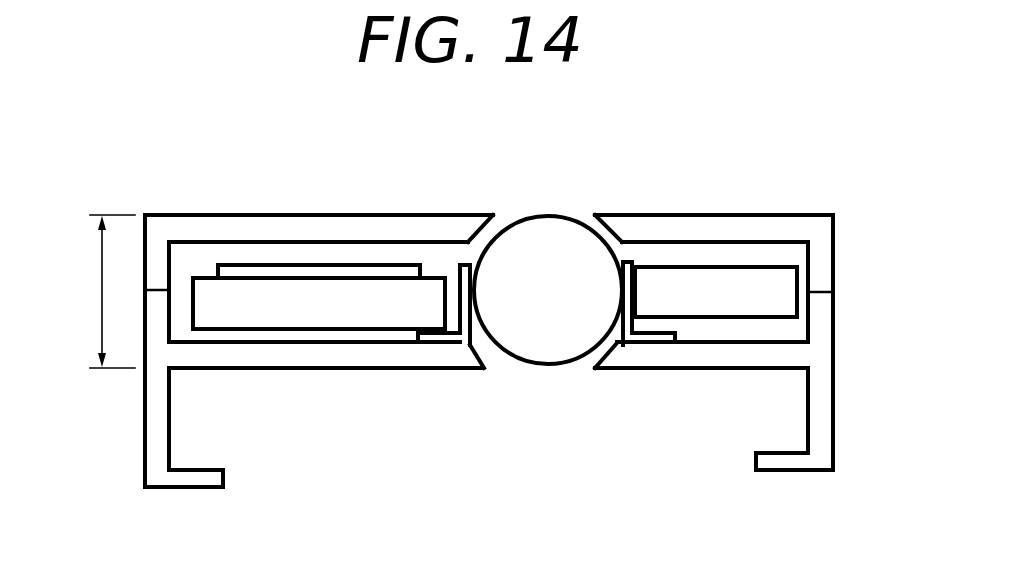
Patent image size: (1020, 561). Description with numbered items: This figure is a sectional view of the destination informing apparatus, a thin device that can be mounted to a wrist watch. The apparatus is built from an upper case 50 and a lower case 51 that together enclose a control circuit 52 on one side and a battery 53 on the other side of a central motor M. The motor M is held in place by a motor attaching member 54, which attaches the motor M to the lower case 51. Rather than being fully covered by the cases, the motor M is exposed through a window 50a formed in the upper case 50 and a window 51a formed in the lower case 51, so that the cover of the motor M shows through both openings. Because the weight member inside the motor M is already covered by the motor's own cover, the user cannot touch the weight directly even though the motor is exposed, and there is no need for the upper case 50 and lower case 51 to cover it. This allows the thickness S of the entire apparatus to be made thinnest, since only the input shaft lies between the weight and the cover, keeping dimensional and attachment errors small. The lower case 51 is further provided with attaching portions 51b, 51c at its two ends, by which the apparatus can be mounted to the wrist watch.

The upper case 50 is at (258, 225).
The window 50a is at (477, 229).
The lower case 51 is at (353, 362).
The window 51a is at (494, 353).
The attaching portion 51b is at (163, 428).
The attaching portion 51c is at (813, 410).
The control circuit 52 is at (728, 277).
The battery 53 is at (339, 282).
The motor attaching member 54 is at (467, 342).
The motor M is at (562, 224).
The thickness of the entire apparatus S is at (107, 291).